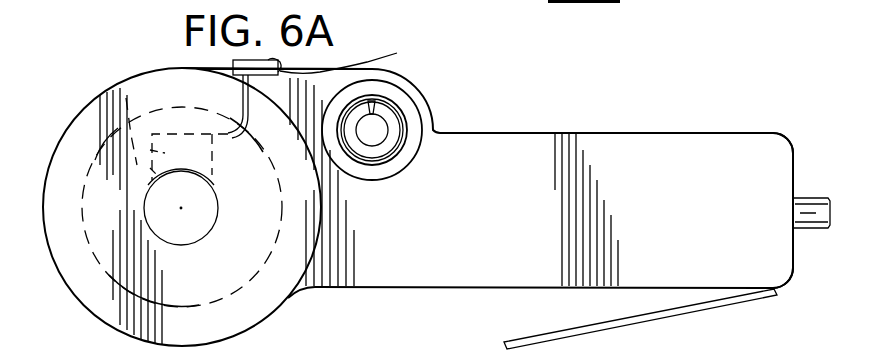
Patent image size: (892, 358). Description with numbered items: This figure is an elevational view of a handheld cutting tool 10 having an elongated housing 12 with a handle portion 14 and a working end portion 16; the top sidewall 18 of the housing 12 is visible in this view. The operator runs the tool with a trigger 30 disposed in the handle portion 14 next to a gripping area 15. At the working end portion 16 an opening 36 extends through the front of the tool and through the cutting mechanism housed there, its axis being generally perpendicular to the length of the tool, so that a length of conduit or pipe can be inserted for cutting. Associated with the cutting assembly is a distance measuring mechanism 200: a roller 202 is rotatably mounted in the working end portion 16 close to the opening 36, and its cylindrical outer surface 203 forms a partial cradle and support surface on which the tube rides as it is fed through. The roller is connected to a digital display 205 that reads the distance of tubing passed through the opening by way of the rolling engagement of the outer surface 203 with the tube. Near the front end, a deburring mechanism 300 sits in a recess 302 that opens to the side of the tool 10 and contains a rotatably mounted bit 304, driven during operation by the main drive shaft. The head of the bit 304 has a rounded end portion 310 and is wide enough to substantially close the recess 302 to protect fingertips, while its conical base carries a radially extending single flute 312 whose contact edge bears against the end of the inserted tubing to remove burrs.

The handheld cutting tool 10 is at (77, 113).
The elongated housing 12 is at (545, 133).
The handle portion 14 is at (665, 152).
The gripping area 15 is at (743, 150).
The working end portion 16 is at (84, 145).
The top sidewall 18 is at (169, 68).
The trigger 30 is at (657, 314).
The opening 36 is at (170, 218).
The distance measuring mechanism 200 is at (359, 56).
The roller 202 is at (150, 98).
The outer surface 203 is at (107, 87).
The digital display 205 is at (278, 63).
The deburring mechanism 300 is at (406, 147).
The recess 302 is at (405, 157).
The bit 304 is at (389, 130).
The rounded end portion 310 is at (370, 136).
The single flute 312 is at (387, 106).